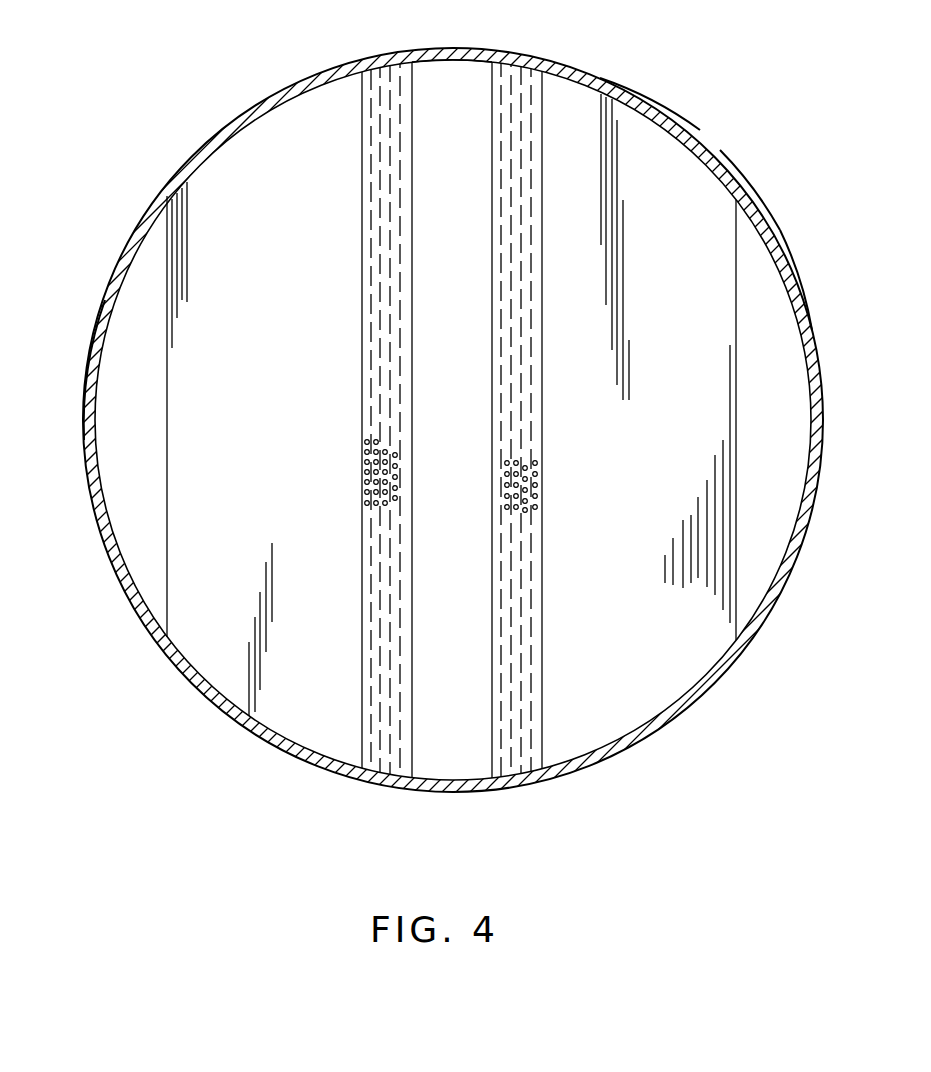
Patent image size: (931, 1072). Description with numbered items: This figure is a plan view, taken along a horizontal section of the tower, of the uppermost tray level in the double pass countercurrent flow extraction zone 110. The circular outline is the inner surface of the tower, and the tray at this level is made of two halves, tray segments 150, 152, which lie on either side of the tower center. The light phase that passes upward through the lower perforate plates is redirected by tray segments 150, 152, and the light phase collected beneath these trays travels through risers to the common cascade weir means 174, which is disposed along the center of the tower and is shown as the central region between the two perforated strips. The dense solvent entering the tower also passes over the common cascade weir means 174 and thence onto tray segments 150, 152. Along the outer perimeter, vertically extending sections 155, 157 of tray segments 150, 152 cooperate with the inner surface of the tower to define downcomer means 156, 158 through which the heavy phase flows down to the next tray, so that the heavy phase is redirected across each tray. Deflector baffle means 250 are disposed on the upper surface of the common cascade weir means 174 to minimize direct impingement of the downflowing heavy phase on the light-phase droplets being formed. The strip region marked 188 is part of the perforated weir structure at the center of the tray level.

The double pass countercurrent flow extraction zone 110 is at (752, 207).
The tray segment 150 is at (634, 130).
The tray segment 152 is at (288, 108).
The vertically extending section 155 is at (738, 256).
The downcomer means 156 is at (764, 299).
The vertically extending section 157 is at (166, 272).
The downcomer means 158 is at (128, 366).
The common cascade weir means 174 is at (444, 77).
The perforated strip 188 is at (532, 96).
The deflector baffle means 250 is at (492, 140).